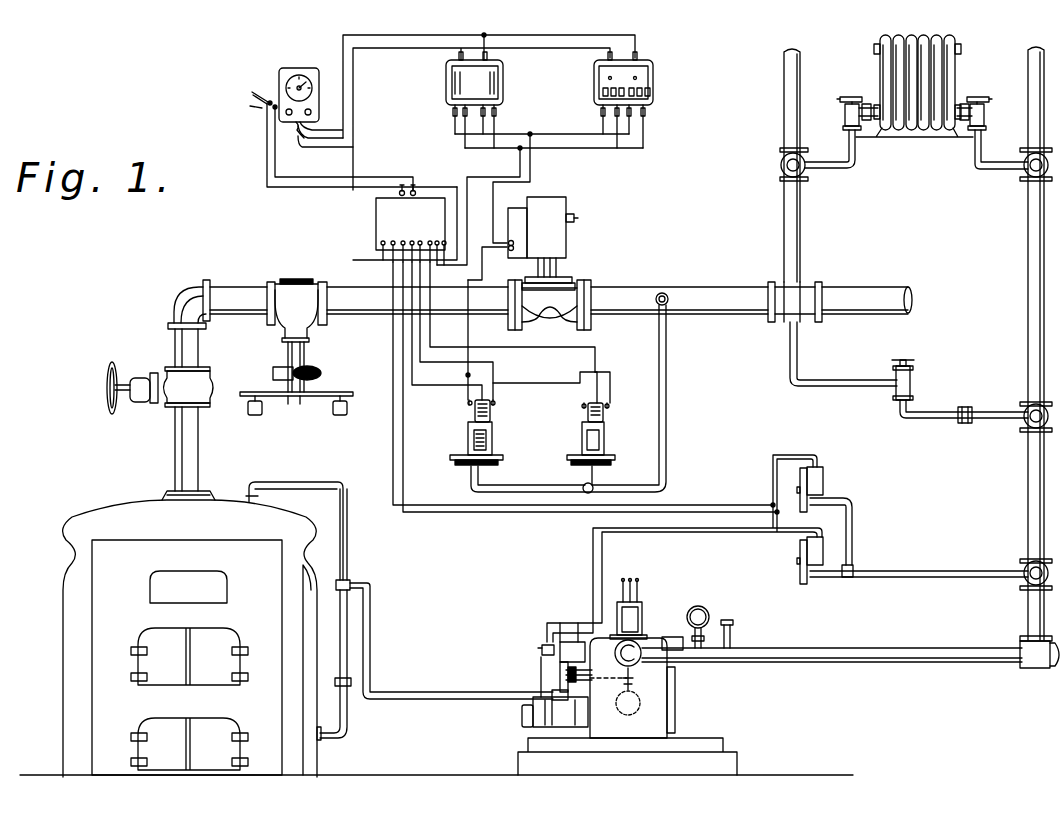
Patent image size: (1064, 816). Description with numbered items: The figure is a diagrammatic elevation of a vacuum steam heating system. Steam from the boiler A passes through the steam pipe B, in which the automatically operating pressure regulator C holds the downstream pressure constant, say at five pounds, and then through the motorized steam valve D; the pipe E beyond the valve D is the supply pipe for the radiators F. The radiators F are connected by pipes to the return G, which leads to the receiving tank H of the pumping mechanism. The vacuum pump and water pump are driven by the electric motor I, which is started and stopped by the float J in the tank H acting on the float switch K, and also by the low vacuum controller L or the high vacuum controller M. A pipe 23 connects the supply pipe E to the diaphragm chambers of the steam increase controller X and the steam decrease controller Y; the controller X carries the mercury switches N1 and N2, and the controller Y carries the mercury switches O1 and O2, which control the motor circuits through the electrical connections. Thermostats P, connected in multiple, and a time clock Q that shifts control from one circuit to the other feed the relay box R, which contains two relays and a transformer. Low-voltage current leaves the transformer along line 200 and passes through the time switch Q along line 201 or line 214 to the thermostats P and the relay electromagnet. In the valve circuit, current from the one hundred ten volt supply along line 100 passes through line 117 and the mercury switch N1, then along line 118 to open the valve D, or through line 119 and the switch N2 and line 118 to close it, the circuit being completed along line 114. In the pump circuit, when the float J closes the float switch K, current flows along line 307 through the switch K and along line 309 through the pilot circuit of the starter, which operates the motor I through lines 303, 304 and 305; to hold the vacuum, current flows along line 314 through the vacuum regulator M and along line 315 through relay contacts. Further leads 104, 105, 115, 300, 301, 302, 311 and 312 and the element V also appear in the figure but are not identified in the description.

The steam boiler A is at (108, 518).
The steam pipe B is at (222, 294).
The pressure regulator C is at (312, 342).
The motorized steam valve D is at (568, 290).
The supply pipe E is at (683, 296).
The radiator F is at (893, 79).
The return G is at (1028, 320).
The receiving tank H is at (660, 692).
The electric motor I is at (523, 725).
The float J is at (658, 715).
The float switch K is at (560, 645).
The low vacuum controller L is at (825, 522).
The high vacuum controller M is at (898, 560).
The mercoid electric switch N1 is at (450, 414).
The mercoid electric switch N2 is at (507, 411).
The mercoid electric switch O1 is at (571, 419).
The mercoid electric switch O2 is at (621, 413).
The thermostat P is at (446, 83).
The time clock Q is at (279, 76).
The relay box R is at (411, 225).
The regulator solenoid V is at (643, 607).
The steam increase controller X is at (452, 460).
The steam decrease controller Y is at (620, 452).
The pipe 23 is at (665, 393).
The line 100 is at (252, 92).
The line 114 is at (250, 107).
The line 200 is at (343, 112).
The line 201 is at (343, 150).
The line 214 is at (343, 138).
The wire 104 is at (530, 385).
The wire 105 is at (590, 347).
The wire 115 is at (600, 372).
The line 117 is at (467, 375).
The line 118 is at (452, 386).
The line 119 is at (496, 364).
The wire 300 is at (623, 578).
The wire 301 is at (630, 578).
The wire 302 is at (650, 577).
The line 303 is at (550, 683).
The line 304 is at (560, 672).
The line 305 is at (540, 655).
The line 307 is at (560, 624).
The line 309 is at (578, 622).
The wire 311 is at (773, 484).
The wire 312 is at (773, 460).
The line 314 is at (722, 530).
The line 315 is at (740, 534).